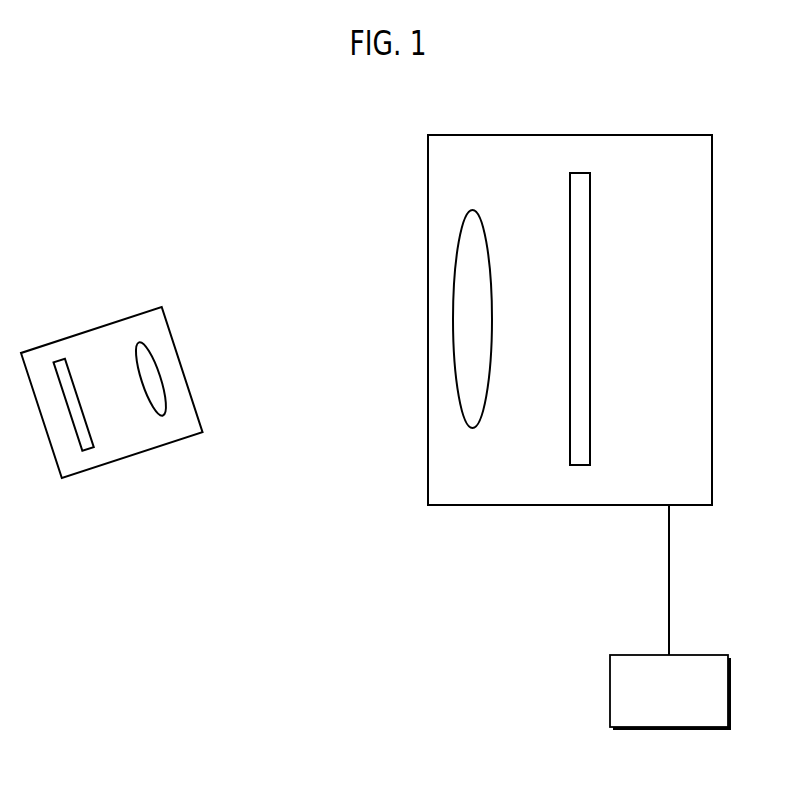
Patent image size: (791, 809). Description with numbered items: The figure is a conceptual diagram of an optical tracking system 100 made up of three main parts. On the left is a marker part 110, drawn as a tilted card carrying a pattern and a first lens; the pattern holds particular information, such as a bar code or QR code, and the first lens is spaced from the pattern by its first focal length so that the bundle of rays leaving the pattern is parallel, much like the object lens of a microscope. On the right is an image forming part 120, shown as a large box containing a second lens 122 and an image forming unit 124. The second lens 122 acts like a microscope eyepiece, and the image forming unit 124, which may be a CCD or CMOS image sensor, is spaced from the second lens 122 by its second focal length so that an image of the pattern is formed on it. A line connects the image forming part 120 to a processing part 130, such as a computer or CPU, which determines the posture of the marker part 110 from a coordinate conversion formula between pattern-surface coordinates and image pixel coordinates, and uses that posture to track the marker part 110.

The optical tracking system 100 is at (183, 115).
The marker part 110 is at (112, 321).
The image forming part 120 is at (568, 407).
The second lens 122 is at (463, 413).
The image forming unit 124 is at (570, 428).
The processing part 130 is at (695, 655).